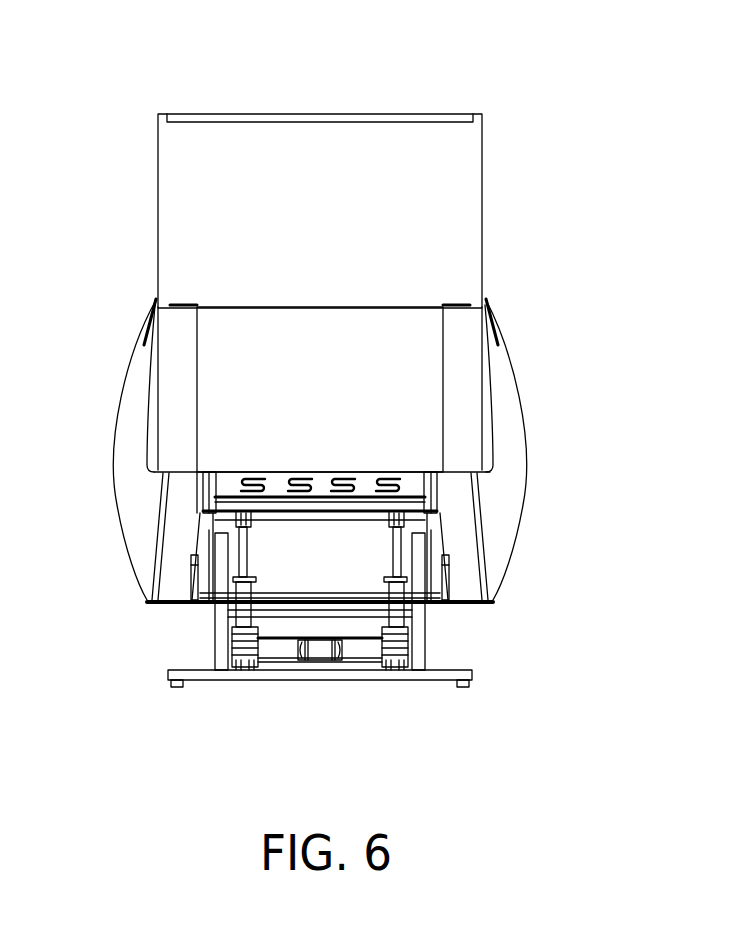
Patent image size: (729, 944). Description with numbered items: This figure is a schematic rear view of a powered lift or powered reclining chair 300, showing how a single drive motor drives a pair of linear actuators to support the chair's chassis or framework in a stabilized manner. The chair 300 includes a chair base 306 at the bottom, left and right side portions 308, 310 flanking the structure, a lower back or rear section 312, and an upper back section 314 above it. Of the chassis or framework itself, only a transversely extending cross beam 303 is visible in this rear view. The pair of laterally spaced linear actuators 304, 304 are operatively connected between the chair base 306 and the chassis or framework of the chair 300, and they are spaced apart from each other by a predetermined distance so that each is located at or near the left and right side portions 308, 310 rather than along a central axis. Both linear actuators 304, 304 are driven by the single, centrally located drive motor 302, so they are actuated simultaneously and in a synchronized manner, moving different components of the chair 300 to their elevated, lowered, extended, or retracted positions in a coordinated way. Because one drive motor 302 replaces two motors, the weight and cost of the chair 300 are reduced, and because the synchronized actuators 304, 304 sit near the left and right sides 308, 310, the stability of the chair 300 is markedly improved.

The powered lift or powered reclining chair 300 is at (558, 108).
The single drive motor 302 is at (323, 650).
The transversely extending cross beam 303 is at (295, 505).
The linear actuator 304 is at (243, 607).
The chair base 306 is at (223, 676).
The left side portion 308 is at (123, 472).
The right side portion 310 is at (517, 447).
The lower back or rear section 312 is at (345, 406).
The upper back section 314 is at (343, 223).